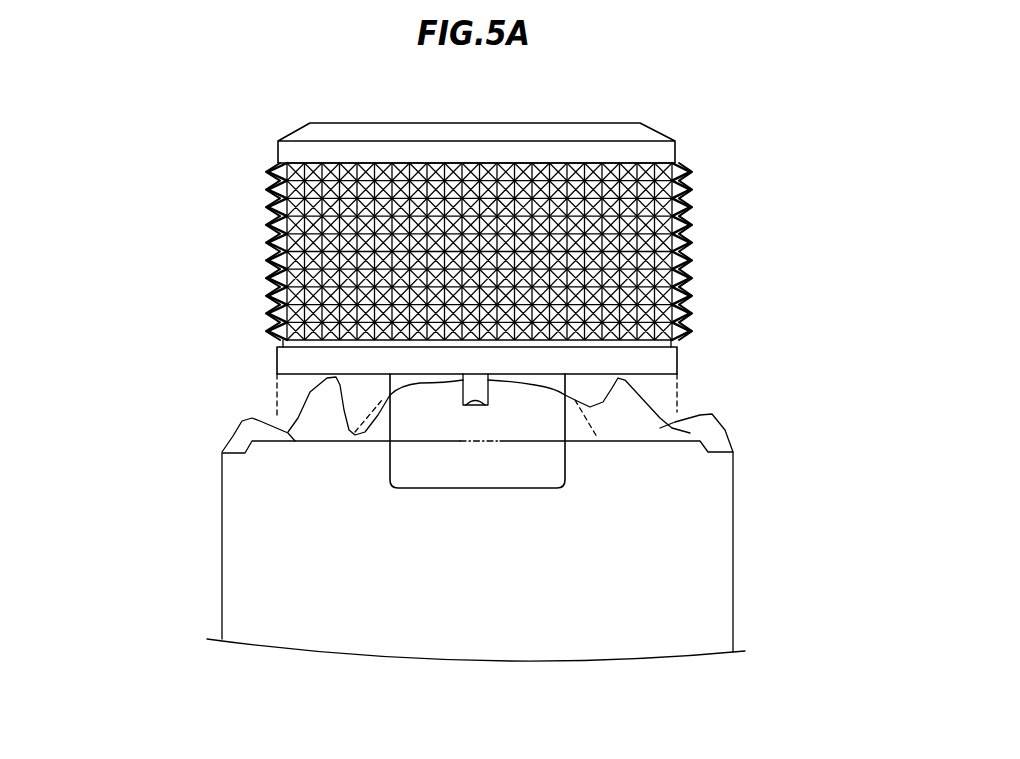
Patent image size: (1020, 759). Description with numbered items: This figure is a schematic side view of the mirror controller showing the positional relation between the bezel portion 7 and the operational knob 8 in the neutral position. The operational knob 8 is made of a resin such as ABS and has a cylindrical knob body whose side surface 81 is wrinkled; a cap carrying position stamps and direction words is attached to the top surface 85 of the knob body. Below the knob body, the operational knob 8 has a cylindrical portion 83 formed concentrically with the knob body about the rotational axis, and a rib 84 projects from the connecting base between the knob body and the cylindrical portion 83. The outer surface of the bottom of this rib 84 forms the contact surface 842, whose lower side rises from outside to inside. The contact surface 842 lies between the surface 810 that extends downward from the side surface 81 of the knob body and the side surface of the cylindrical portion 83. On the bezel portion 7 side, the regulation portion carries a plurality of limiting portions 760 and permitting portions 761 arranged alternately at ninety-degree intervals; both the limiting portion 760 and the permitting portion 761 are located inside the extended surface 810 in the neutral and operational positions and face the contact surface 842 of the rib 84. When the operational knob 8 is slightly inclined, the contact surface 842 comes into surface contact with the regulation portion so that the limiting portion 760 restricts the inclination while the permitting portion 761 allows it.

The operational knob 8 is at (677, 117).
The top surface 85 is at (332, 122).
The side surface 81 is at (277, 358).
The surface 810 is at (277, 398).
The bezel portion 7 is at (765, 380).
The cylindrical portion 83 is at (443, 467).
The contact surface 842 is at (477, 392).
The limiting portion 760 is at (317, 400).
The rib 84 is at (360, 393).
The permitting portion 761 is at (357, 434).